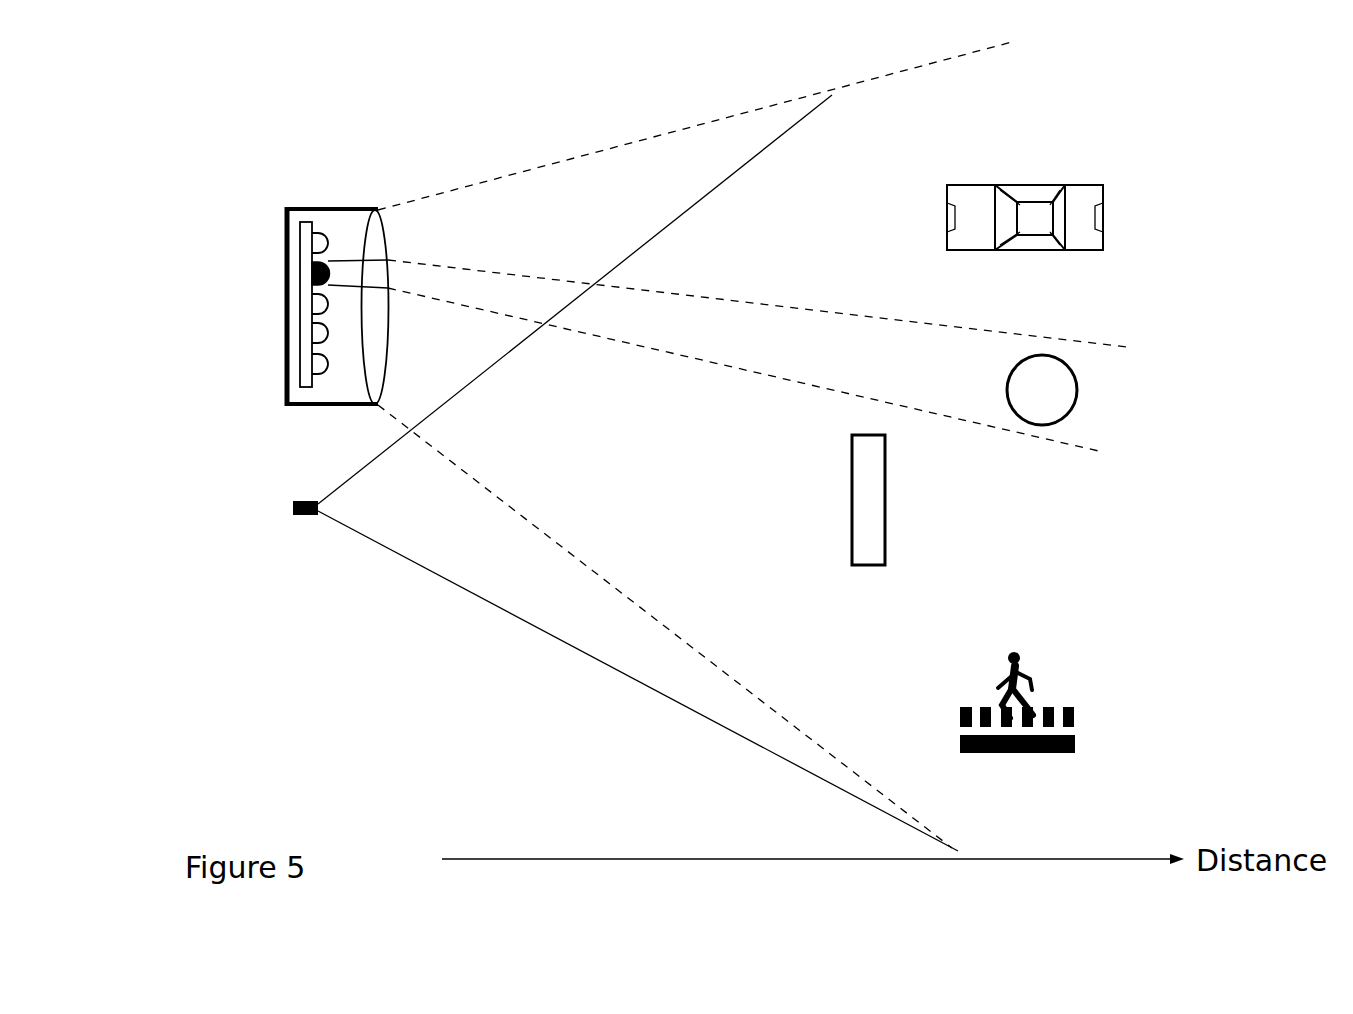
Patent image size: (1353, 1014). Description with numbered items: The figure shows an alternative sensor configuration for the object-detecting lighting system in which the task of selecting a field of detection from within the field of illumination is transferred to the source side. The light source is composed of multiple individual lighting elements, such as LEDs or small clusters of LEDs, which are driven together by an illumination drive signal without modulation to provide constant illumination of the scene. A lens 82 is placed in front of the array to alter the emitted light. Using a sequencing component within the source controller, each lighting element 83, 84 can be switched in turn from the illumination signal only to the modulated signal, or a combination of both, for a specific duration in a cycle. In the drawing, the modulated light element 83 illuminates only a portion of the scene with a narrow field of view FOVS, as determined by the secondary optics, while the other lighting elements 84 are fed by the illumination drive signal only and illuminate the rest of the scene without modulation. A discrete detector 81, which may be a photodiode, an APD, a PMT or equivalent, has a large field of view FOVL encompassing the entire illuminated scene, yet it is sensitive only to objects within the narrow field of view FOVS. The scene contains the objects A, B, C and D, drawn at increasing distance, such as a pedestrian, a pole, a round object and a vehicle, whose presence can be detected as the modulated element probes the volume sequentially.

The discrete detector 81 is at (293, 506).
The lens 82 is at (366, 390).
The modulated light element 83 is at (312, 268).
The lighting element 84 is at (313, 334).
The object A is at (1037, 683).
The object B is at (885, 500).
The object C is at (1078, 393).
The object D is at (1104, 218).
The narrow field of view FOVS is at (772, 307).
The large field of view FOVL is at (568, 645).